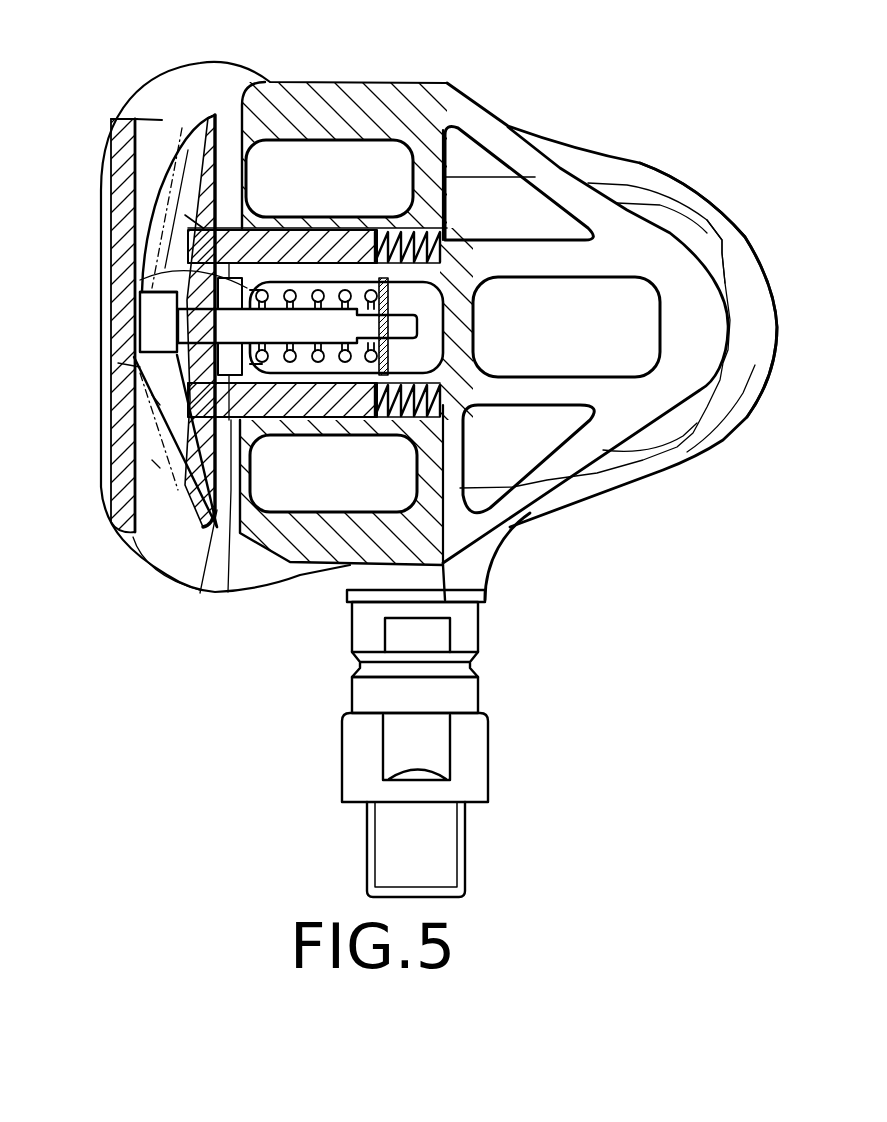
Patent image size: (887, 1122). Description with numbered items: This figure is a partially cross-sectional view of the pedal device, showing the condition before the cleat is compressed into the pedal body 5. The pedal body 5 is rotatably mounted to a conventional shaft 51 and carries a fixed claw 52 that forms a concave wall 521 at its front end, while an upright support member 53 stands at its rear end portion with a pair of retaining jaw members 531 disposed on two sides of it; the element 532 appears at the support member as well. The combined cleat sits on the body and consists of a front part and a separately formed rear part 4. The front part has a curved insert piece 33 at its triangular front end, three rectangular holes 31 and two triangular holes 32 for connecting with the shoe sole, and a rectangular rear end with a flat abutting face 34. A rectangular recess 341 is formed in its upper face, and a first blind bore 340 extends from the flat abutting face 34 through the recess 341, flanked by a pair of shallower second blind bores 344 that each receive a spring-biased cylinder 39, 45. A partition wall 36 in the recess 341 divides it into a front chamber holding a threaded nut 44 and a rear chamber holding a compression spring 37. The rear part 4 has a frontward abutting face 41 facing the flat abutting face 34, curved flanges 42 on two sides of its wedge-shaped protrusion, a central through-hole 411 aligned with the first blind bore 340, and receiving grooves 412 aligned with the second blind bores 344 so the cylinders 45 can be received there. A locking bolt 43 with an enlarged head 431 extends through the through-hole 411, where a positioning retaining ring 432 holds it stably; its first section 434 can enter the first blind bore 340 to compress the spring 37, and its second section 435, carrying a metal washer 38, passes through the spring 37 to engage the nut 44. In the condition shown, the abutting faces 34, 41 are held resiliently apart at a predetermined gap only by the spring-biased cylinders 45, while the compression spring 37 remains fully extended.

The pedal body 5 is at (620, 500).
The rectangular holes 31 is at (355, 157).
The triangular holes 32 is at (542, 200).
The curved insert piece 33 is at (681, 423).
The flat abutting face 34 is at (238, 568).
The first blind bore 340 is at (218, 288).
The rectangular recess 341 is at (470, 407).
The second blind bores 344 is at (229, 228).
The partition wall 36 is at (420, 286).
The compression spring 37 is at (320, 282).
The metal washer 38 is at (263, 372).
The spring-biased cylinder 39 is at (395, 226).
The rear part 4 is at (172, 140).
The frontward abutting face 41 is at (217, 578).
The central through-hole 411 is at (150, 313).
The receiving grooves 412 is at (185, 215).
The curved flanges 42 is at (185, 165).
The locking bolt 43 is at (135, 352).
The enlarged head 431 is at (203, 330).
The positioning retaining ring 432 is at (152, 460).
The first section 434 is at (152, 395).
The second section 435 is at (333, 330).
The threaded nut 44 is at (395, 297).
The spring-biased cylinder 45 is at (272, 230).
The conventional shaft 51 is at (478, 757).
The fixed claw 52 is at (749, 383).
The concave wall 521 is at (720, 250).
The upright support member 53 is at (111, 243).
The retaining jaw members 531 is at (140, 367).
The plate end 532 is at (117, 128).